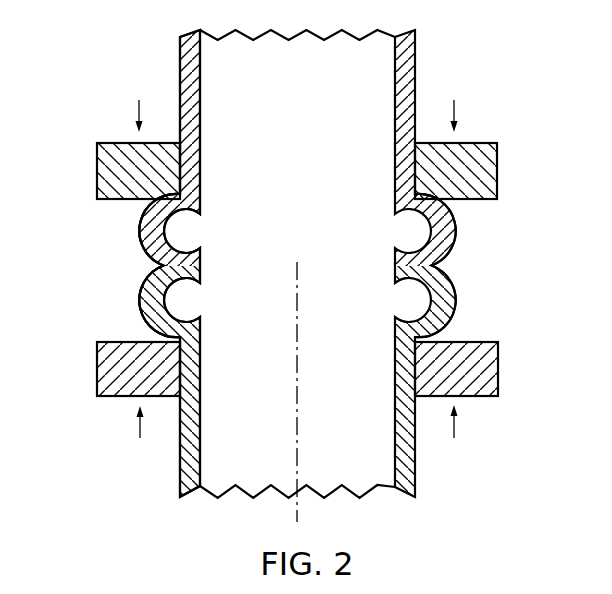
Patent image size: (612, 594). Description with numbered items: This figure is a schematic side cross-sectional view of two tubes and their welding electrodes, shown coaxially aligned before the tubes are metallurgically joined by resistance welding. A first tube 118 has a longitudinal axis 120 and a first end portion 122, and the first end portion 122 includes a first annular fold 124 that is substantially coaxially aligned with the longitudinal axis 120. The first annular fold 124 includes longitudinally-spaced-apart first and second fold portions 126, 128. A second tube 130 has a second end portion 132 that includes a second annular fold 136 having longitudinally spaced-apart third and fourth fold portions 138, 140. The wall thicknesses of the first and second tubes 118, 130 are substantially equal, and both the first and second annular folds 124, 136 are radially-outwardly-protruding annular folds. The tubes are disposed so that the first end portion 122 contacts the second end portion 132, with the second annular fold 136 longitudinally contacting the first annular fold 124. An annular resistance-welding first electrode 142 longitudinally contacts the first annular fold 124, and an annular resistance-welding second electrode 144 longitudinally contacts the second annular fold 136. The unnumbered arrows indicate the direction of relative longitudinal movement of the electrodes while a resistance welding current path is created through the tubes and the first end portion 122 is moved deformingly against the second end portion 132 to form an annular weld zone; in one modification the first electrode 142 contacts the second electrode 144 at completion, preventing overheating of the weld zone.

The first tube 118 is at (433, 470).
The longitudinal axis 120 is at (298, 390).
The first end portion 122 is at (133, 302).
The first annular fold 124 is at (452, 292).
The first fold portion 126 is at (395, 290).
The second fold portion 128 is at (397, 313).
The second tube 130 is at (172, 68).
The second end portion 132 is at (462, 233).
The second annular fold 136 is at (142, 232).
The third fold portion 138 is at (200, 240).
The fourth fold portion 140 is at (200, 224).
The first electrode 142 is at (487, 363).
The second electrode 144 is at (97, 163).